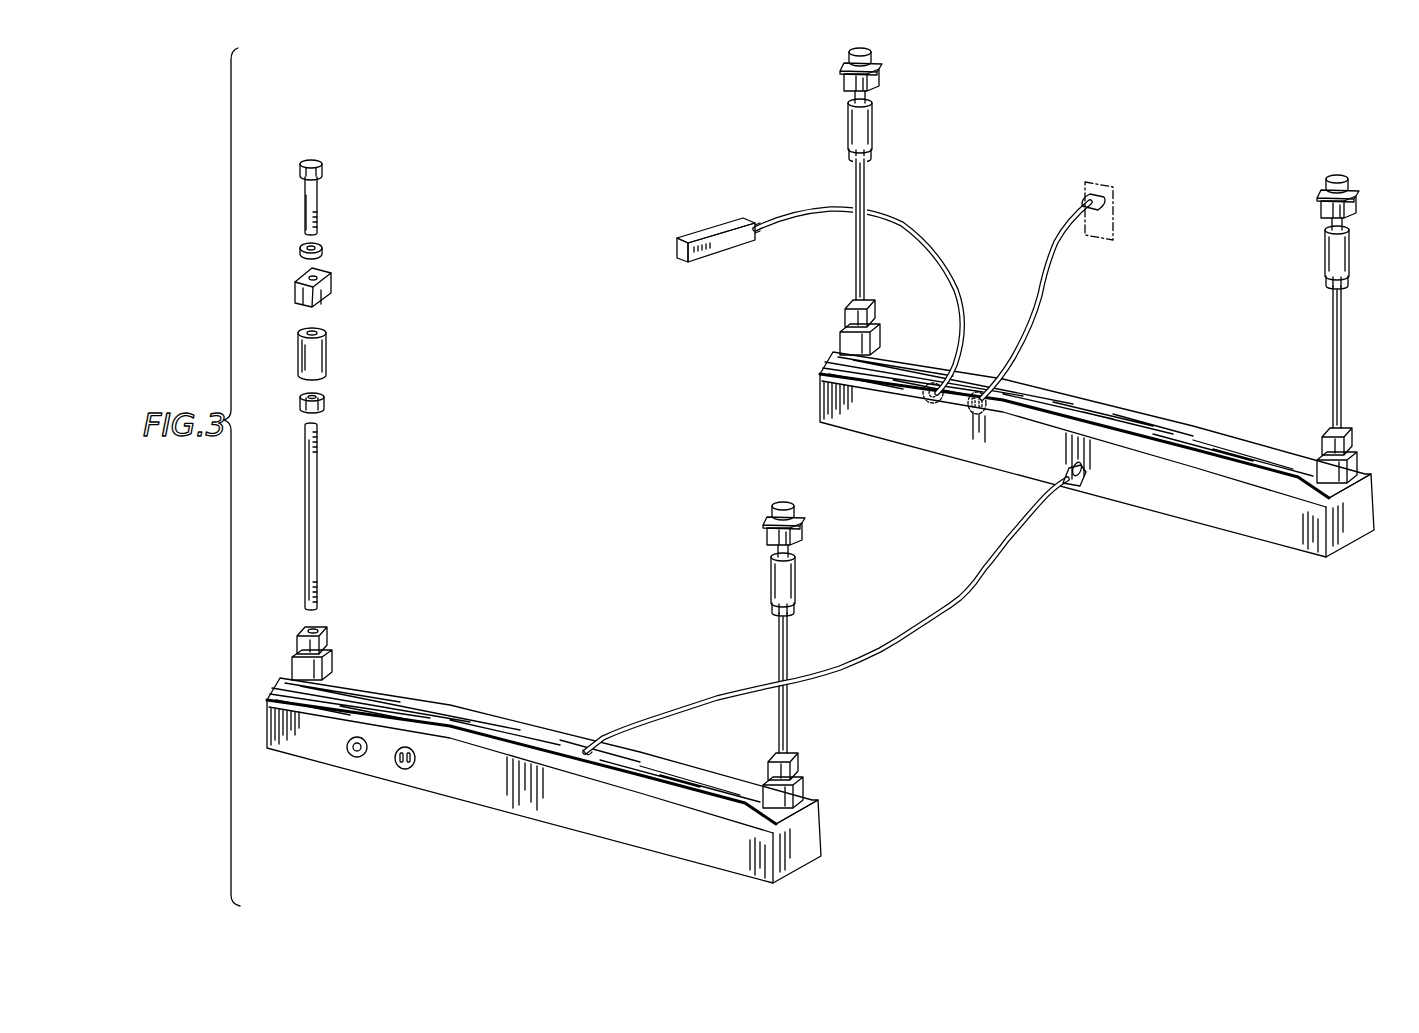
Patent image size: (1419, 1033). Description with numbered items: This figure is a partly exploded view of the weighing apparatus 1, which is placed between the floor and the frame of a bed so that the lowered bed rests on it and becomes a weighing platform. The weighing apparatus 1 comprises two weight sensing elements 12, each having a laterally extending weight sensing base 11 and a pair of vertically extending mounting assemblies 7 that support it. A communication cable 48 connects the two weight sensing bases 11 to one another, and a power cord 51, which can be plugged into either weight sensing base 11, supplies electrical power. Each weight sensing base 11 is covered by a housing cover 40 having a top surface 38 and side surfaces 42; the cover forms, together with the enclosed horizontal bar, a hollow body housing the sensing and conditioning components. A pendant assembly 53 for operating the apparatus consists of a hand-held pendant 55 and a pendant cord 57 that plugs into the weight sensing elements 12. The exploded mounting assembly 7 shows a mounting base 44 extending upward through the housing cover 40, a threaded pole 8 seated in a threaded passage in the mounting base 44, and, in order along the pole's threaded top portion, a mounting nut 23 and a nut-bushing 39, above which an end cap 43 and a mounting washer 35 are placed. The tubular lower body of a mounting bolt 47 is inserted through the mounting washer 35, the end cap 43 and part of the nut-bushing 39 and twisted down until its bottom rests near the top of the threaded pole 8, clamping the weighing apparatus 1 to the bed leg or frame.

The weighing apparatus 1 is at (1123, 667).
The mounting assembly 7 is at (787, 713).
The threaded pole 8 is at (302, 528).
The weight sensing base 11 is at (820, 624).
The weight sensing element 12 is at (723, 873).
The mounting nut 23 is at (327, 402).
The mounting washer 35 is at (323, 252).
The top surface 38 is at (457, 708).
The nut-bushing 39 is at (328, 357).
The housing cover 40 is at (443, 773).
The side surfaces 42 is at (535, 803).
The end cap 43 is at (327, 293).
The mounting base 44 is at (292, 655).
The mounting bolt 47 is at (310, 162).
The communication cable 48 is at (912, 628).
The power cord 51 is at (1038, 292).
The pendant assembly 53 is at (757, 218).
The hand-held pendant 55 is at (675, 248).
The pendant cord 57 is at (945, 263).